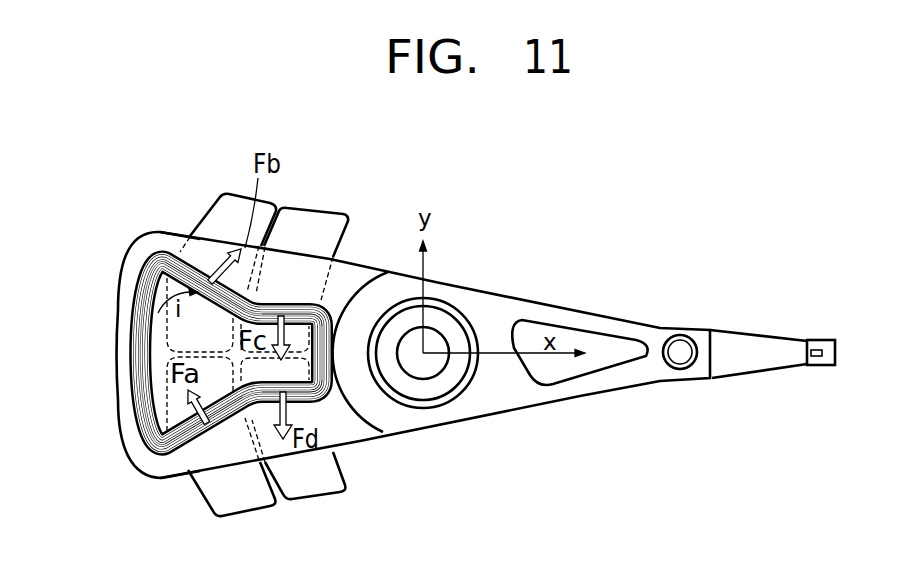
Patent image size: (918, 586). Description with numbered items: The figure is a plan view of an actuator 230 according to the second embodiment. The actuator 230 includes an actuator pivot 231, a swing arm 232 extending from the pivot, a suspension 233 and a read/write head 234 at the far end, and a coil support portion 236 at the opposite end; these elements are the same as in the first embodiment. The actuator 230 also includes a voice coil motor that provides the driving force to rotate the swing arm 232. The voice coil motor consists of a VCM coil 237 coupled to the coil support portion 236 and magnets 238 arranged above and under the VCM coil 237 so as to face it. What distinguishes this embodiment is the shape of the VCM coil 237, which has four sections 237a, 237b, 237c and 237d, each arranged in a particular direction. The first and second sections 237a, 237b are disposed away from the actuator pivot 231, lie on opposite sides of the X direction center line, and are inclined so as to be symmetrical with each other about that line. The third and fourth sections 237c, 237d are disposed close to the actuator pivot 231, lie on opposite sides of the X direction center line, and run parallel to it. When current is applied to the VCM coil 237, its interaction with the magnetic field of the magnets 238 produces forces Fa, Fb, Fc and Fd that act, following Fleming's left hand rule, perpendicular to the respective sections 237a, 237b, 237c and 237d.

The actuator 230 is at (501, 257).
The actuator pivot 231 is at (440, 392).
The swing arm 232 is at (583, 393).
The suspension 233 is at (737, 367).
The read/write head 234 is at (827, 367).
The coil support portion 236 is at (150, 468).
The VCM coil 237 is at (123, 340).
The first section 237a is at (190, 465).
The second section 237b is at (188, 242).
The third section 237c is at (318, 298).
The fourth section 237d is at (320, 403).
The magnets 238 is at (302, 505).